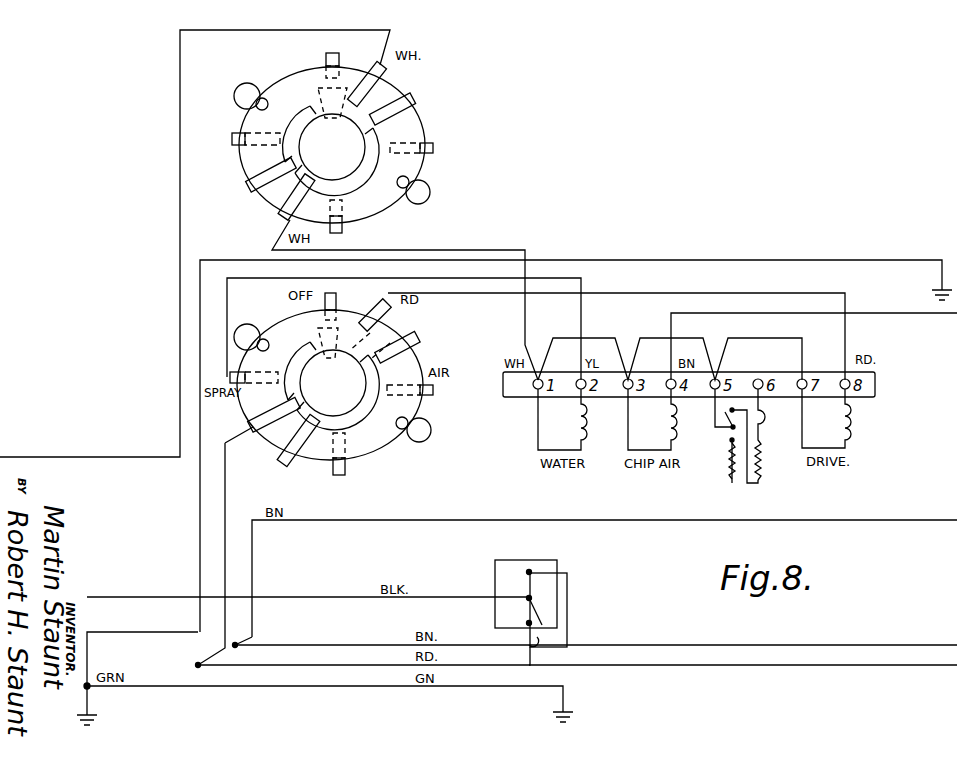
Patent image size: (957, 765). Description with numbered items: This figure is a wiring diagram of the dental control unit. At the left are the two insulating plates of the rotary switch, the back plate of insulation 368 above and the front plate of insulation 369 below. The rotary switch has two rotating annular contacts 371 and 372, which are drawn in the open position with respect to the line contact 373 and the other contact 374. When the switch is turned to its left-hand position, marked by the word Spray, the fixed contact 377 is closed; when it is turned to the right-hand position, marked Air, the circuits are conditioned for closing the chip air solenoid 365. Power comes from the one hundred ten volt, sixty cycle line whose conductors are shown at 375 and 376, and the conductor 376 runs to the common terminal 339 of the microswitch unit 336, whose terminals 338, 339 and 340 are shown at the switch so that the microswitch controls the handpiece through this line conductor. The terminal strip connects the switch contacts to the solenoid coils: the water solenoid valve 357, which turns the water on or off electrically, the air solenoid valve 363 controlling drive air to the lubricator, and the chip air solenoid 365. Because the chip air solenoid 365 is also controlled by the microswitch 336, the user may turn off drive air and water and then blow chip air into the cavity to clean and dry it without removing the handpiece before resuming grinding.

The back plate of insulation 368 is at (356, 143).
The rotating annular contact 371 is at (365, 167).
The line contact 373 is at (362, 92).
The front plate of insulation 369 is at (347, 387).
The rotating annular contact 372 is at (363, 408).
The other contact 374 is at (273, 428).
The fixed contact 377 is at (287, 350).
The line conductor 375 is at (113, 457).
The line conductor 376 is at (128, 597).
The water solenoid valve 357 is at (578, 418).
The chip air solenoid valve 365 is at (668, 418).
The air solenoid valve 363 is at (848, 424).
The switch unit 336 is at (563, 601).
The terminal 338 is at (529, 572).
The common terminal 339 is at (529, 598).
The terminal 340 is at (529, 623).